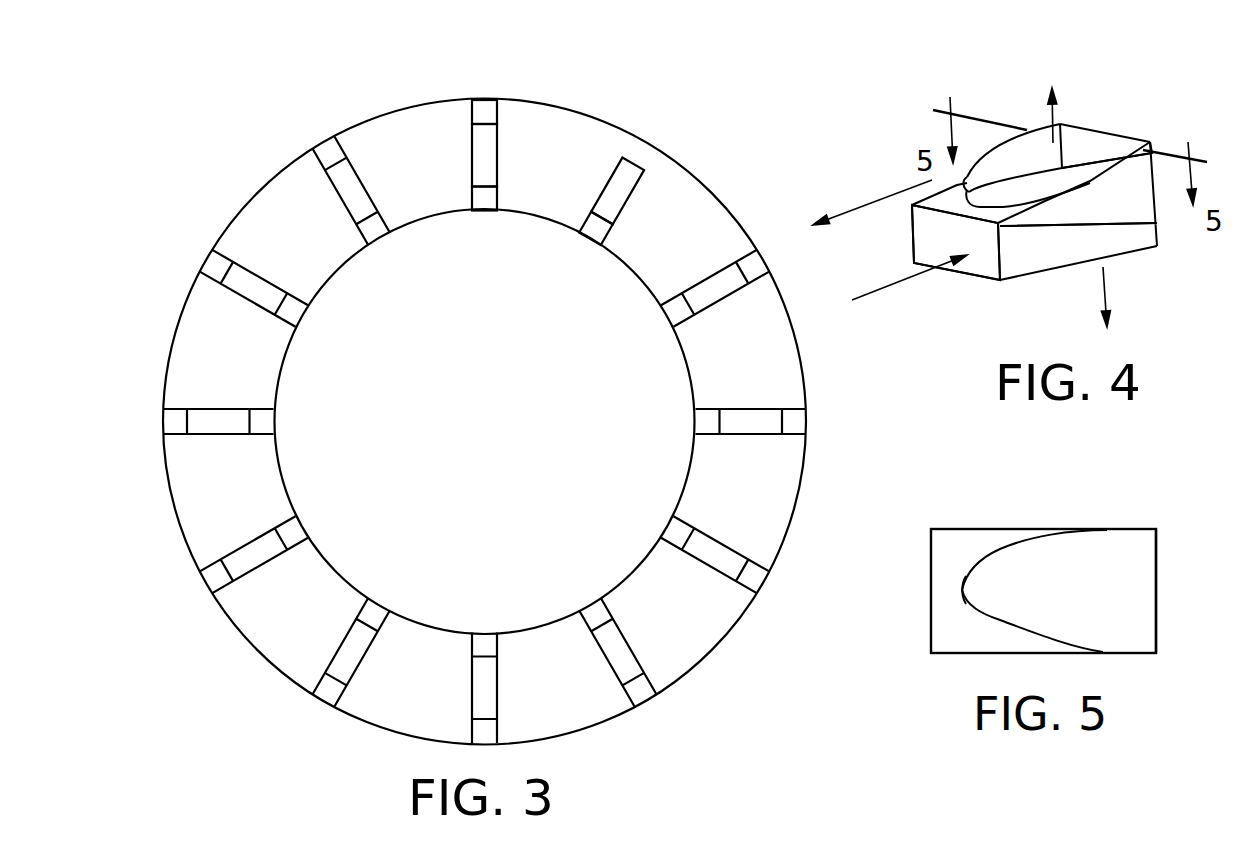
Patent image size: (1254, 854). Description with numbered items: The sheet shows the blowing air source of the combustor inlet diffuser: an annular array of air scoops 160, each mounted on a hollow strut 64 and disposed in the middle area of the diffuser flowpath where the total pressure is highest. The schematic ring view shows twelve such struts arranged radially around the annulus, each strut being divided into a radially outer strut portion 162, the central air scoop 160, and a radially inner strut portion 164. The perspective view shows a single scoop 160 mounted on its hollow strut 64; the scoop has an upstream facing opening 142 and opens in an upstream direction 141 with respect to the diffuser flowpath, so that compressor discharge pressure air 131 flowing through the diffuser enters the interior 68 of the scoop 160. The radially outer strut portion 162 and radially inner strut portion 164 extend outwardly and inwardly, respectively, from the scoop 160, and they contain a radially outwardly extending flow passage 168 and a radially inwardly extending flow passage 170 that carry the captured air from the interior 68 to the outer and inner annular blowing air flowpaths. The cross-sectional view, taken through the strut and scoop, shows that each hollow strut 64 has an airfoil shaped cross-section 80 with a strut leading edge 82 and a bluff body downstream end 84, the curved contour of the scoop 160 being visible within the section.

In FIG. 3, the hollow strut 64 is at (608, 227).
In FIG. 4, the hollow strut 64 is at (1095, 132).
In FIG. 5, the hollow strut 64 is at (1058, 643).
In FIG. 3, the interior 68 is at (620, 187).
In FIG. 4, the interior 68 is at (985, 250).
In FIG. 5, the airfoil shaped cross-section 80 is at (1108, 560).
In FIG. 5, the strut leading edge 82 is at (962, 590).
In FIG. 5, the bluff body downstream end 84 is at (1157, 582).
In FIG. 4, the compressor discharge pressure air 131 is at (903, 285).
In FIG. 4, the upstream direction 141 is at (880, 198).
In FIG. 4, the upstream facing opening 142 is at (933, 226).
In FIG. 3, the air scoop 160 is at (487, 155).
In FIG. 4, the air scoop 160 is at (1010, 257).
In FIG. 5, the air scoop 160 is at (970, 529).
In FIG. 3, the radially outer strut portion 162 is at (488, 112).
In FIG. 4, the radially outer strut portion 162 is at (1115, 165).
In FIG. 3, the radially inner strut portion 164 is at (482, 195).
In FIG. 4, the radially inner strut portion 164 is at (1160, 233).
In FIG. 4, the radially outwardly extending flow passage 168 is at (1042, 147).
In FIG. 4, the radially inwardly extending flow passage 170 is at (1128, 247).